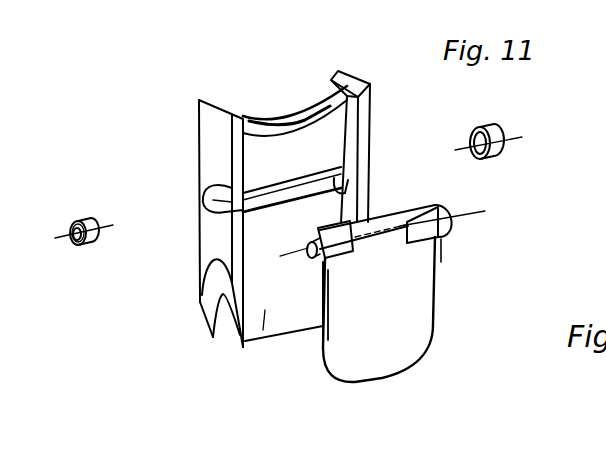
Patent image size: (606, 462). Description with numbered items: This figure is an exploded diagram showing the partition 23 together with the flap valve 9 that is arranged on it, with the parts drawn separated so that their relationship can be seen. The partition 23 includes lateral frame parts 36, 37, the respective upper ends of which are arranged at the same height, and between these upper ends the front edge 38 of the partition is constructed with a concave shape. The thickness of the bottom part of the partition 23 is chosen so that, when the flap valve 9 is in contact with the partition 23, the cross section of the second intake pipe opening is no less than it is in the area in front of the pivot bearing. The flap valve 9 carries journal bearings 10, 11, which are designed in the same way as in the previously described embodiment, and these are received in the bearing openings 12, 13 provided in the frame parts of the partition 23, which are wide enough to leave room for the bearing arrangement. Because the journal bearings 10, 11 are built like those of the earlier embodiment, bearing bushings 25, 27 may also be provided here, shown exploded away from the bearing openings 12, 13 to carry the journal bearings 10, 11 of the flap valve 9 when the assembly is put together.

The flap valve 9 is at (420, 288).
The journal bearing 10 is at (316, 256).
The journal bearing 11 is at (450, 223).
The bearing opening 12 is at (206, 204).
The bearing opening 13 is at (351, 183).
The partition 23 is at (257, 343).
The bearing bushing 25 is at (89, 248).
The bearing bushing 27 is at (505, 148).
The lateral frame part 36 is at (200, 252).
The lateral frame part 37 is at (363, 125).
The front edge 38 is at (278, 118).